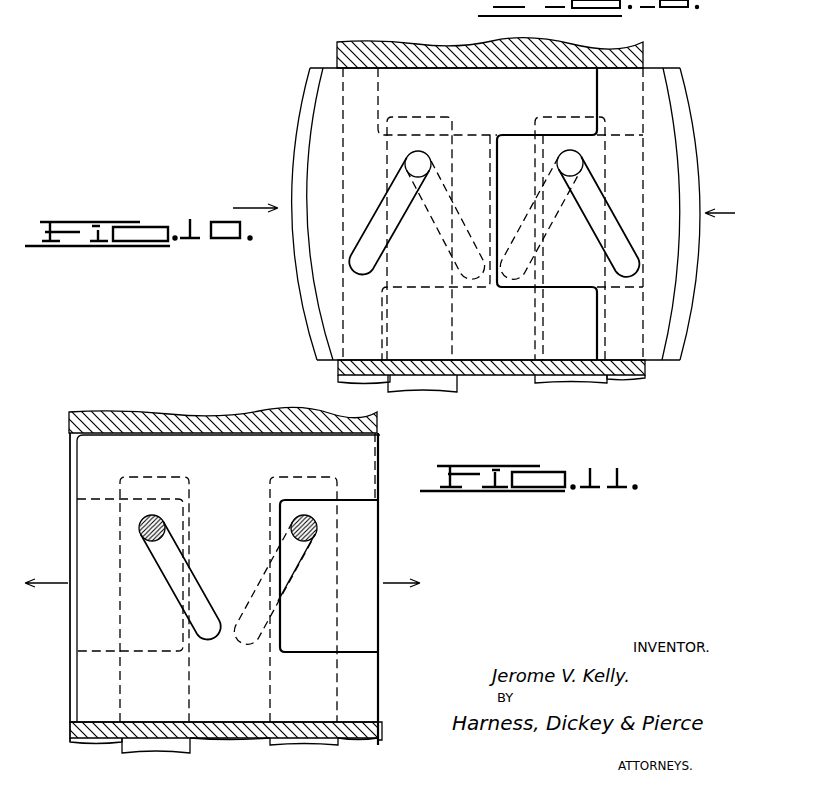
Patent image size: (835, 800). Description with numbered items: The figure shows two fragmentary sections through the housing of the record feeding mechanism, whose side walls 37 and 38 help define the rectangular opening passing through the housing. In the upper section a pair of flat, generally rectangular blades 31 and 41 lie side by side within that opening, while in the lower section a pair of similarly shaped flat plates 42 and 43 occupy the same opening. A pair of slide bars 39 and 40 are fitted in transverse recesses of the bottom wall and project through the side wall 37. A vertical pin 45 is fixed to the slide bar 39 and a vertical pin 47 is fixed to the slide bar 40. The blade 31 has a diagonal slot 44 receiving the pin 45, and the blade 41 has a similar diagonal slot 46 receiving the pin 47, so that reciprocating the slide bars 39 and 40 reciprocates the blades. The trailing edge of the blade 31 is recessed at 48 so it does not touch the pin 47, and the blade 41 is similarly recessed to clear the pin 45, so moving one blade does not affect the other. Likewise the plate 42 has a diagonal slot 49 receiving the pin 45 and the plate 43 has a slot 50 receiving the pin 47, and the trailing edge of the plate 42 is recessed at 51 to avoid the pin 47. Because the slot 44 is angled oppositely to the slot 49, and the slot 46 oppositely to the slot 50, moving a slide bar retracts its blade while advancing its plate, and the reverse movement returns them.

In FIG. 10, the flat blade 31 is at (305, 318).
In FIG. 10, the side wall 37 is at (636, 378).
In FIG. 11, the side wall 37 is at (376, 742).
In FIG. 10, the side wall 38 is at (490, 45).
In FIG. 11, the side wall 38 is at (232, 412).
In FIG. 10, the slide bar 39 is at (445, 392).
In FIG. 11, the slide bar 39 is at (190, 750).
In FIG. 10, the slide bar 40 is at (586, 384).
In FIG. 11, the slide bar 40 is at (310, 746).
In FIG. 10, the flat blade 41 is at (678, 122).
In FIG. 11, the flat plate 42 is at (75, 470).
In FIG. 11, the flat plate 43 is at (372, 550).
In FIG. 10, the diagonal slot 44 is at (368, 234).
In FIG. 10, the vertical pin 45 is at (405, 162).
In FIG. 11, the vertical pin 45 is at (140, 522).
In FIG. 10, the diagonal slot 46 is at (618, 220).
In FIG. 10, the vertical pin 47 is at (582, 166).
In FIG. 11, the vertical pin 47 is at (318, 528).
In FIG. 10, the recess 48 is at (495, 143).
In FIG. 10, the diagonal slot 49 is at (437, 222).
In FIG. 11, the diagonal slot 49 is at (157, 558).
In FIG. 10, the diagonal slot 50 is at (558, 222).
In FIG. 11, the diagonal slot 50 is at (287, 578).
In FIG. 11, the recess 51 is at (284, 503).